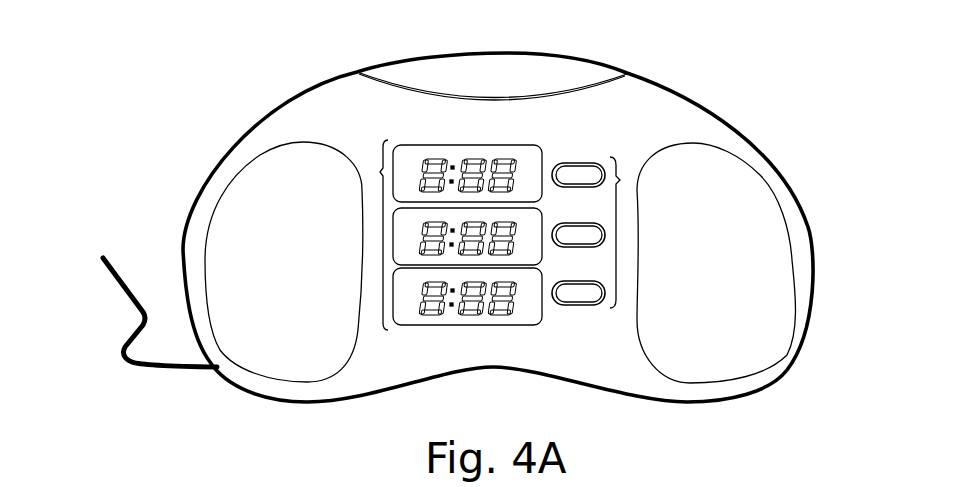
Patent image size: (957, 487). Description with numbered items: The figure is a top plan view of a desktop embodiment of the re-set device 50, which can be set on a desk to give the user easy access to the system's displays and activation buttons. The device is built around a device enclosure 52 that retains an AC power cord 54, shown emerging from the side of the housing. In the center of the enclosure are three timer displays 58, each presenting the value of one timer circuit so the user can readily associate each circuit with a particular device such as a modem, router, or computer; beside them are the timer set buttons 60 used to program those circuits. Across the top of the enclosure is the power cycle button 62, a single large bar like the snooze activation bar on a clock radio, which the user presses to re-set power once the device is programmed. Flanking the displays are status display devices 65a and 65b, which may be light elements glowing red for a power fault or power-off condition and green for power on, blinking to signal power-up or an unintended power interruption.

The re-set device 50 is at (454, 206).
The device enclosure 52 is at (670, 85).
The AC power cord 54 is at (113, 283).
The timer displays 58 is at (380, 172).
The timer set buttons 60 is at (620, 180).
The power cycle button 62 is at (480, 67).
The status display device 65a is at (220, 262).
The status display device 65b is at (775, 290).